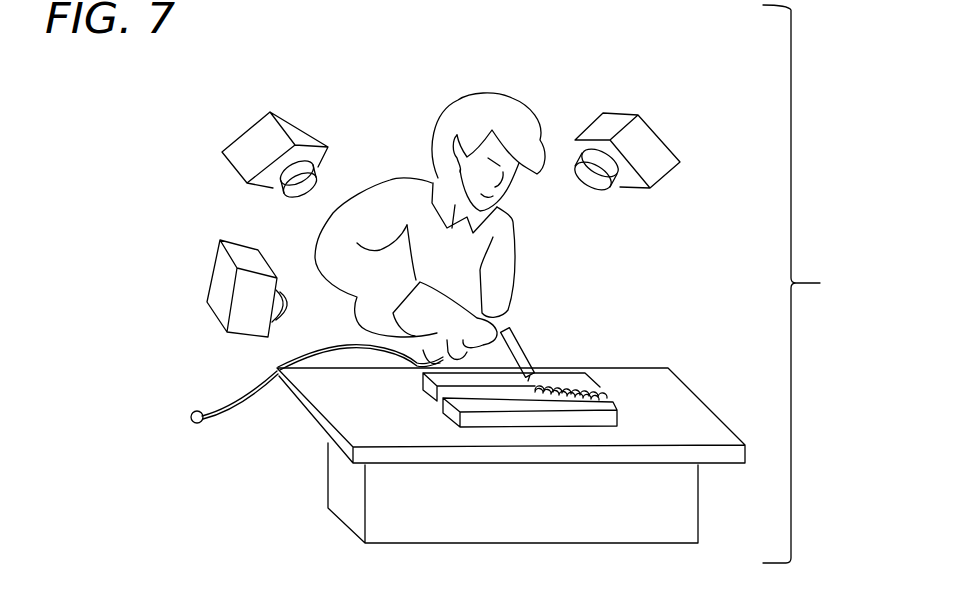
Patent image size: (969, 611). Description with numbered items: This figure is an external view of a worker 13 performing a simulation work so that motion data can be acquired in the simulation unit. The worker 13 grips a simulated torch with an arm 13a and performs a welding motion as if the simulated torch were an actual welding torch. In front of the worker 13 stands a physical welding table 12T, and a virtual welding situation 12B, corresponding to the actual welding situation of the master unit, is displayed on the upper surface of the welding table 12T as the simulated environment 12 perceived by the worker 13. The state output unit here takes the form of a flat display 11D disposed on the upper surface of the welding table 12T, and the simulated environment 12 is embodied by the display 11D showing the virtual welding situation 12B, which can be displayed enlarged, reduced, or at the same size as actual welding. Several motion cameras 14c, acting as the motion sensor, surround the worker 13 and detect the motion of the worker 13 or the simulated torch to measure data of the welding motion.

The display 11D is at (685, 398).
The simulated environment 12 is at (808, 284).
The virtual welding situation 12B is at (563, 378).
The welding table 12T is at (520, 513).
The worker 13 is at (409, 221).
The arm 13a is at (440, 310).
The motion camera 14c is at (258, 148).